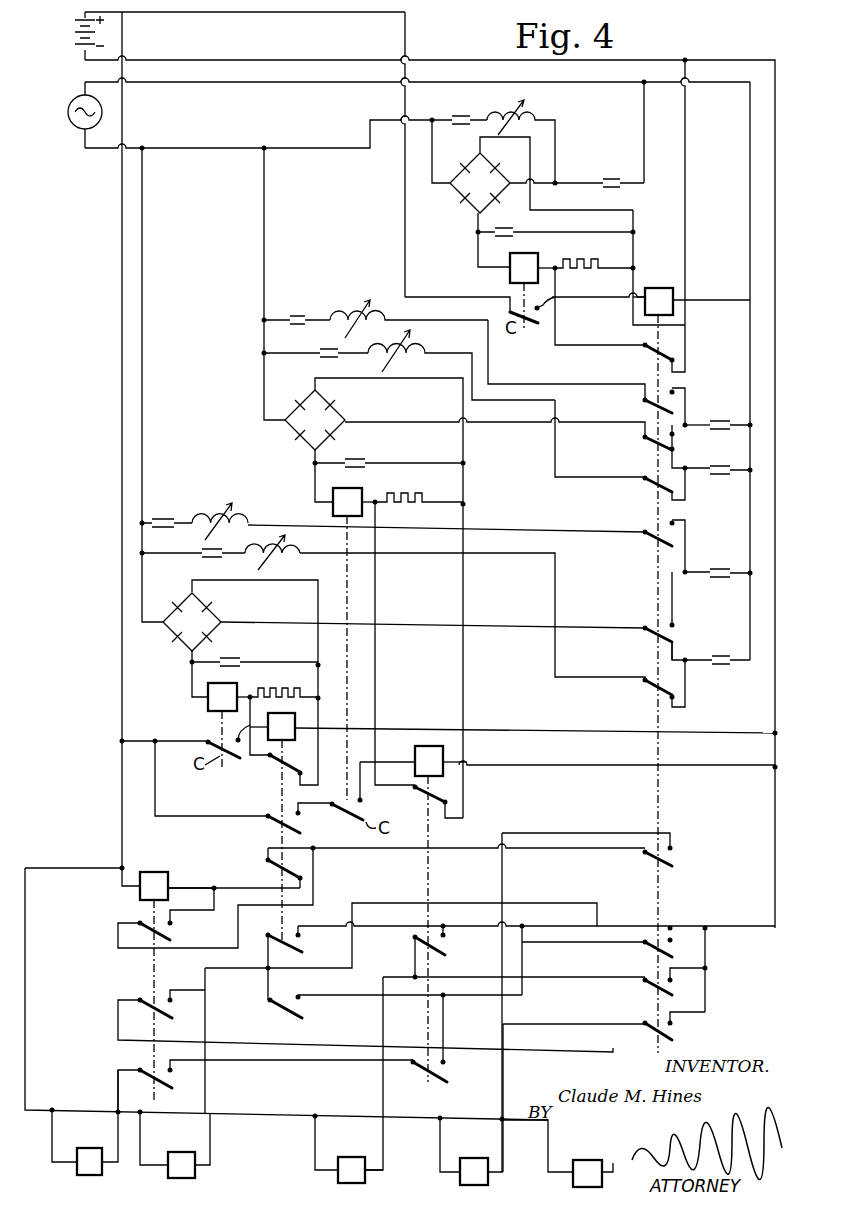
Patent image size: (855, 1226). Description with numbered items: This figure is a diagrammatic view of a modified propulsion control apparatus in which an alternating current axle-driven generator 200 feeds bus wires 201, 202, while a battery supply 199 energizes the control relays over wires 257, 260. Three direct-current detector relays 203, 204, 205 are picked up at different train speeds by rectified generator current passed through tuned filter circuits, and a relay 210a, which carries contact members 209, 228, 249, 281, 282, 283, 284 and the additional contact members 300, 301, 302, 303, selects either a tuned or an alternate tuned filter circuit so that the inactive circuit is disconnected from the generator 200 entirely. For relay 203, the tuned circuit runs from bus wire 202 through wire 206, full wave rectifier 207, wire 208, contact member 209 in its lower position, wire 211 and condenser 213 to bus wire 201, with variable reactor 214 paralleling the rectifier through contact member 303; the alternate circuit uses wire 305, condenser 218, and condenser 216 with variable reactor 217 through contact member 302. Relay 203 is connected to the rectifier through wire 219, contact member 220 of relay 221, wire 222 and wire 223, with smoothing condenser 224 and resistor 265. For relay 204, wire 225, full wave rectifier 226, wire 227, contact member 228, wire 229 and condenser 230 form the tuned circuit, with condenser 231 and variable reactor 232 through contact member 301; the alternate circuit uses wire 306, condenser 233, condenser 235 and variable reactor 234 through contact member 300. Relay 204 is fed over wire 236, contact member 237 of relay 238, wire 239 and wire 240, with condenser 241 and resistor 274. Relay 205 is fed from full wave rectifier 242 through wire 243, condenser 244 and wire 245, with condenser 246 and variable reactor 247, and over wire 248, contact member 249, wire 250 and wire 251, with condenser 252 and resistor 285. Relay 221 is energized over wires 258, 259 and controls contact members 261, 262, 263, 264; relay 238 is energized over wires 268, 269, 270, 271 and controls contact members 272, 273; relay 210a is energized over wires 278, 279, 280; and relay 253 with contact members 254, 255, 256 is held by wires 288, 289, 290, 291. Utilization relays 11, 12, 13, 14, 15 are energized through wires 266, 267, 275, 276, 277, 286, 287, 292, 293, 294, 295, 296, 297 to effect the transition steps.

The utilization relay 11 is at (196, 1135).
The utilization relay 12 is at (358, 1133).
The utilization relay 13 is at (480, 1134).
The utilization relay 14 is at (569, 1165).
The utilization relay 15 is at (95, 1132).
The battery supply 199 is at (75, 36).
The alternating current axle-driven generator 200 is at (68, 113).
The bus wire 201 is at (186, 80).
The bus wire 202 is at (249, 147).
The detector relay 203 is at (210, 712).
The detector relay 204 is at (333, 508).
The detector relay 205 is at (512, 275).
The wire 206 is at (144, 366).
The full wave rectifier 207 is at (178, 645).
The wire 208 is at (449, 622).
The contact member 209 is at (648, 638).
The relay 210a is at (680, 303).
The wire 211 is at (680, 656).
The condenser 213 is at (710, 665).
The variable reactor 214 is at (271, 553).
The condenser 216 is at (185, 510).
The variable reactor 217 is at (212, 505).
The condenser 218 is at (730, 578).
The wire 219 is at (193, 589).
The contact member 220 is at (278, 776).
The relay 221 is at (750, 518).
The wire 222 is at (248, 762).
The wire 223 is at (190, 690).
The condenser 224 is at (238, 658).
The wire 225 is at (264, 255).
The full wave rectifier 226 is at (310, 448).
The wire 227 is at (491, 422).
The contact member 228 is at (648, 445).
The wire 229 is at (555, 475).
The condenser 230 is at (735, 460).
The condenser 231 is at (328, 350).
The variable reactor 232 is at (418, 330).
The condenser 233 is at (730, 410).
The variable reactor 234 is at (347, 302).
The condenser 235 is at (310, 308).
The wire 236 is at (445, 460).
The contact member 237 is at (433, 800).
The relay 238 is at (418, 748).
The wire 239 is at (378, 690).
The wire 240 is at (315, 485).
The condenser 241 is at (344, 458).
The full wave rectifier 242 is at (472, 210).
The wire 243 is at (538, 185).
The condenser 244 is at (608, 180).
The wire 245 is at (644, 142).
The condenser 246 is at (472, 116).
The variable reactor 247 is at (546, 113).
The wire 248 is at (633, 216).
The contact member 249 is at (650, 350).
The wire 250 is at (588, 346).
The wire 251 is at (478, 263).
The condenser 252 is at (500, 226).
The relay 253 is at (166, 872).
The contact member 254 is at (173, 933).
The contact member 255 is at (148, 1017).
The contact member 256 is at (145, 1090).
The wire 257 is at (122, 295).
The wire 258 is at (140, 741).
The wire 259 is at (559, 729).
The wire 260 is at (494, 62).
The contact member 261 is at (280, 870).
The contact member 262 is at (300, 942).
The contact member 263 is at (272, 1030).
The contact member 264 is at (268, 822).
The resistor 265 is at (272, 686).
The wire 266 is at (205, 1022).
The wire 267 is at (25, 1000).
The wire 268 is at (155, 800).
The wire 269 is at (305, 820).
The wire 270 is at (358, 762).
The wire 271 is at (601, 762).
The contact member 272 is at (432, 936).
The contact member 273 is at (425, 1083).
The resistor 274 is at (442, 495).
The wire 275 is at (448, 933).
The wire 276 is at (414, 964).
The wire 277 is at (383, 1026).
The wire 278 is at (298, 17).
The wire 279 is at (645, 287).
The wire 280 is at (688, 146).
The contact member 281 is at (648, 867).
The contact member 282 is at (648, 950).
The contact member 283 is at (648, 990).
The contact member 284 is at (655, 1030).
The resistor 285 is at (589, 268).
The wire 286 is at (705, 985).
The wire 287 is at (503, 1090).
The wire 288 is at (502, 893).
The wire 289 is at (415, 850).
The wire 290 is at (185, 888).
The wire 291 is at (313, 903).
The wire 292 is at (462, 995).
The wire 293 is at (192, 968).
The wire 294 is at (118, 1036).
The wire 295 is at (443, 1026).
The wire 296 is at (298, 1063).
The wire 297 is at (118, 1090).
The contact member 300 is at (648, 402).
The contact member 301 is at (648, 485).
The contact member 302 is at (650, 540).
The contact member 303 is at (650, 695).
The wire 305 is at (704, 570).
The wire 306 is at (688, 423).